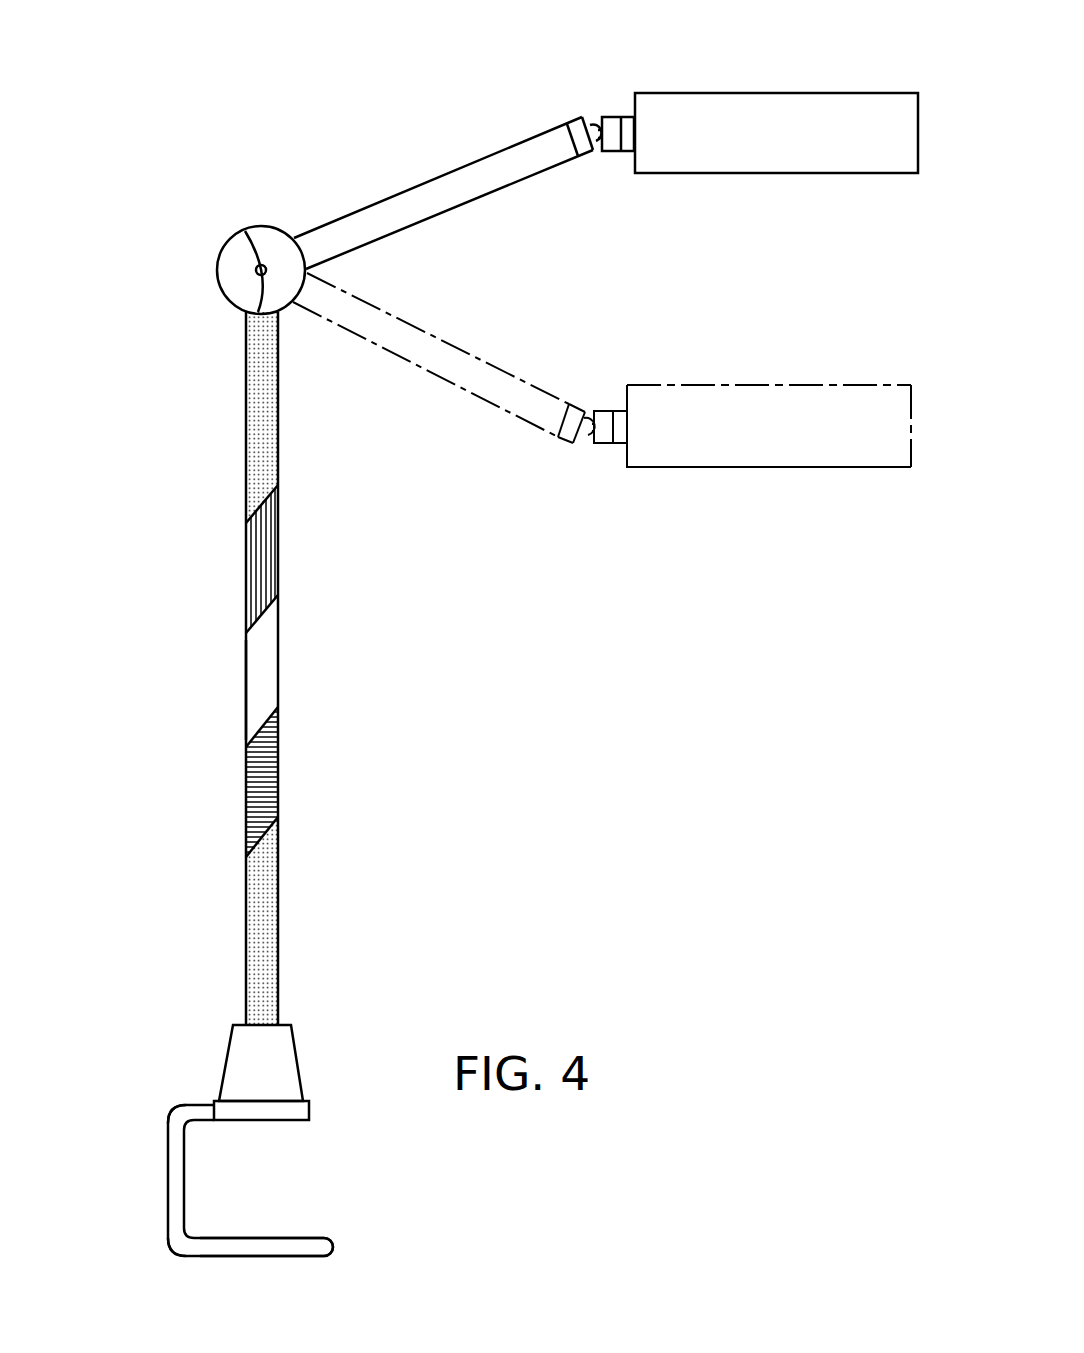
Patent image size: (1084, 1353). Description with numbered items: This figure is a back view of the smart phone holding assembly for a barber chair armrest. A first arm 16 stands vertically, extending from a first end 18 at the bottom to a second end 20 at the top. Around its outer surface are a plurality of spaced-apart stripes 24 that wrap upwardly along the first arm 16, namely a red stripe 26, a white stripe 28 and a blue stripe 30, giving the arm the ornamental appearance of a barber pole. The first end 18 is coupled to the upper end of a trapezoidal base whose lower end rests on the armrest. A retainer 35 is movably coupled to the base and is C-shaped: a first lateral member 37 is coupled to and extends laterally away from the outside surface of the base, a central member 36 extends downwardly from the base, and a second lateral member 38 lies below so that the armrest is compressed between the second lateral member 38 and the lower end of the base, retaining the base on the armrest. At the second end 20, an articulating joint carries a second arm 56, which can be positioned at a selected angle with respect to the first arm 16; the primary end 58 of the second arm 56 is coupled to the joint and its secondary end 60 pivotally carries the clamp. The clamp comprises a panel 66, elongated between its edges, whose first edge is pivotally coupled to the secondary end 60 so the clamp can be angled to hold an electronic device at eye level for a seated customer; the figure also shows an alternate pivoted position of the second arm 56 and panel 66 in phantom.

The first arm 16 is at (247, 672).
The first end 18 is at (232, 1043).
The second end 20 is at (245, 231).
The stripes 24 is at (297, 756).
The red stripe 26 is at (228, 576).
The white stripe 28 is at (228, 717).
The blue stripe 30 is at (228, 815).
The retainer 35 is at (172, 1253).
The central member 36 is at (168, 1167).
The first lateral member 37 is at (177, 1105).
The second lateral member 38 is at (243, 1255).
The second arm 56 is at (445, 176).
The primary end 58 is at (298, 256).
The secondary end 60 is at (590, 124).
The panel 66 is at (918, 93).